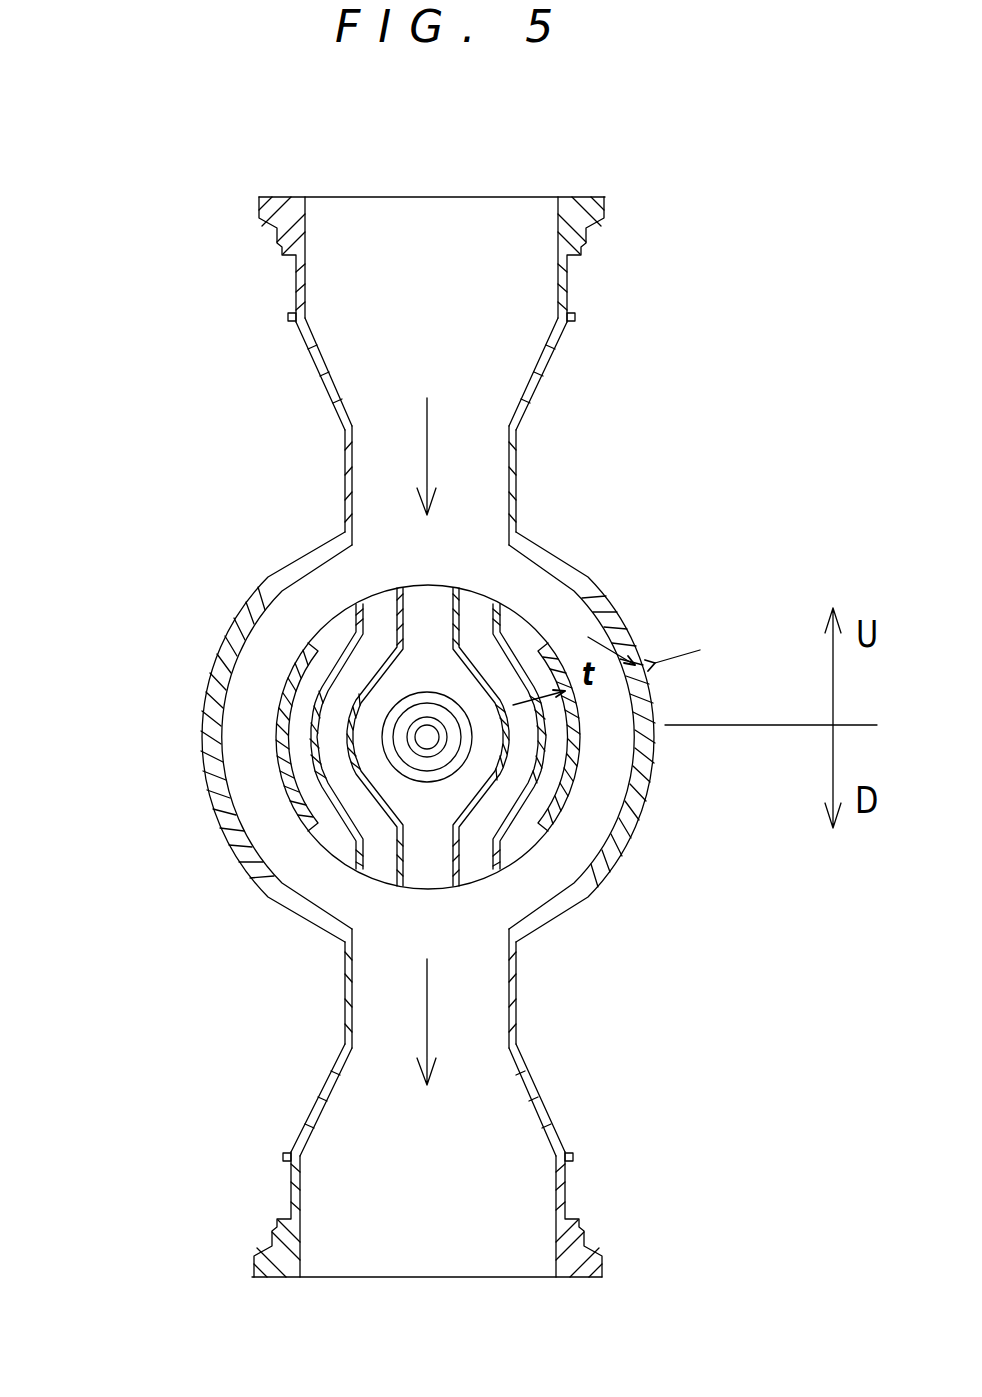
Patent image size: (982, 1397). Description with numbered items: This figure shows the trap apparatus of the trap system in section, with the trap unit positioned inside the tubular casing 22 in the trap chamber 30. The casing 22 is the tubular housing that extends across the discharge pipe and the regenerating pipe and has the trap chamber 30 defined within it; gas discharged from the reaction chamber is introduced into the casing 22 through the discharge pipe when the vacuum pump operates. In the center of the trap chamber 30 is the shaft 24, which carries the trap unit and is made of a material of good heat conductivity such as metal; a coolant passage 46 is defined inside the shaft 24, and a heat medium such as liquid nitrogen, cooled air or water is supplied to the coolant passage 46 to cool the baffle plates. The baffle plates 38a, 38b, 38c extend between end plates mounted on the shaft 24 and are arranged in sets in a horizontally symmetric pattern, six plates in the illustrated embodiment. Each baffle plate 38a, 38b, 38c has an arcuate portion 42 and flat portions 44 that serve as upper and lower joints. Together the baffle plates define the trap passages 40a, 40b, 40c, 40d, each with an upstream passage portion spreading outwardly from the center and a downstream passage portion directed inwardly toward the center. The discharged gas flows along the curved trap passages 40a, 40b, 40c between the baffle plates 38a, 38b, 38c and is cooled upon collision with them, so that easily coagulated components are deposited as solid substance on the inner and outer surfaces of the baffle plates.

The tubular casing 22 is at (214, 815).
The shaft 24 is at (392, 714).
The trap chamber 30 is at (612, 634).
The baffle plate 38a is at (548, 713).
The baffle plate 38b is at (550, 757).
The baffle plate 38c is at (575, 784).
The trap passage 40a is at (432, 850).
The trap passage 40b is at (478, 848).
The trap passage 40c is at (523, 827).
The trap passage 40d is at (593, 828).
The arcuate portion 42 is at (306, 825).
The flat portion 44 is at (393, 622).
The coolant passage 46 is at (398, 748).